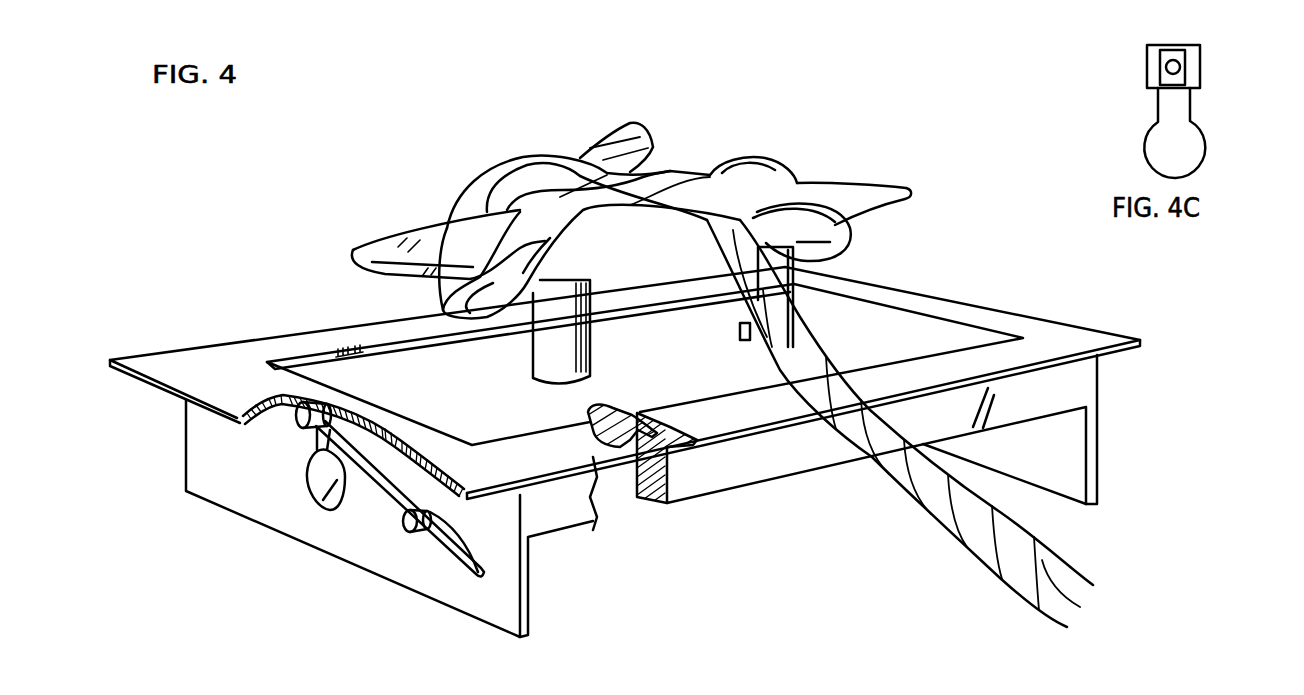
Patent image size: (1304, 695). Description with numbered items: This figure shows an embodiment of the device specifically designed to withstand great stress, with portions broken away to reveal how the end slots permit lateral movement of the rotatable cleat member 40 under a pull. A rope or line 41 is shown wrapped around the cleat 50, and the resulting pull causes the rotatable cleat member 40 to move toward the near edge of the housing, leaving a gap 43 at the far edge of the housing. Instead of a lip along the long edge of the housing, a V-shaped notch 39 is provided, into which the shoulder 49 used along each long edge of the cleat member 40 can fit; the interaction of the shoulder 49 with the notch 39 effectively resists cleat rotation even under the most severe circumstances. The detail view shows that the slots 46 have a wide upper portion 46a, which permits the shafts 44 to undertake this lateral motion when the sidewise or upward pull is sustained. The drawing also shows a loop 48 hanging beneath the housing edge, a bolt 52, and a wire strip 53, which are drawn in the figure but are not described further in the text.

In FIG. 4, the "V" shaped notch 39 is at (667, 463).
In FIG. 4, the rotatable cleat member 40 is at (940, 300).
In FIG. 4, the rope or line 41 is at (647, 135).
In FIG. 4, the gap 43 is at (337, 352).
In FIG. 4, the shafts 44 is at (340, 404).
In FIG. 4C, the shafts 44 is at (1165, 62).
In FIG. 4C, the slots 46 is at (1190, 105).
In FIG. 4C, the wide upper portion 46a is at (1200, 63).
In FIG. 4, the hook loop 48 is at (325, 505).
In FIG. 4, the shoulder 49 is at (633, 453).
In FIG. 4, the cleat 50 is at (883, 195).
In FIG. 4, the bolt 52 is at (417, 540).
In FIG. 4, the wire strip 53 is at (373, 470).